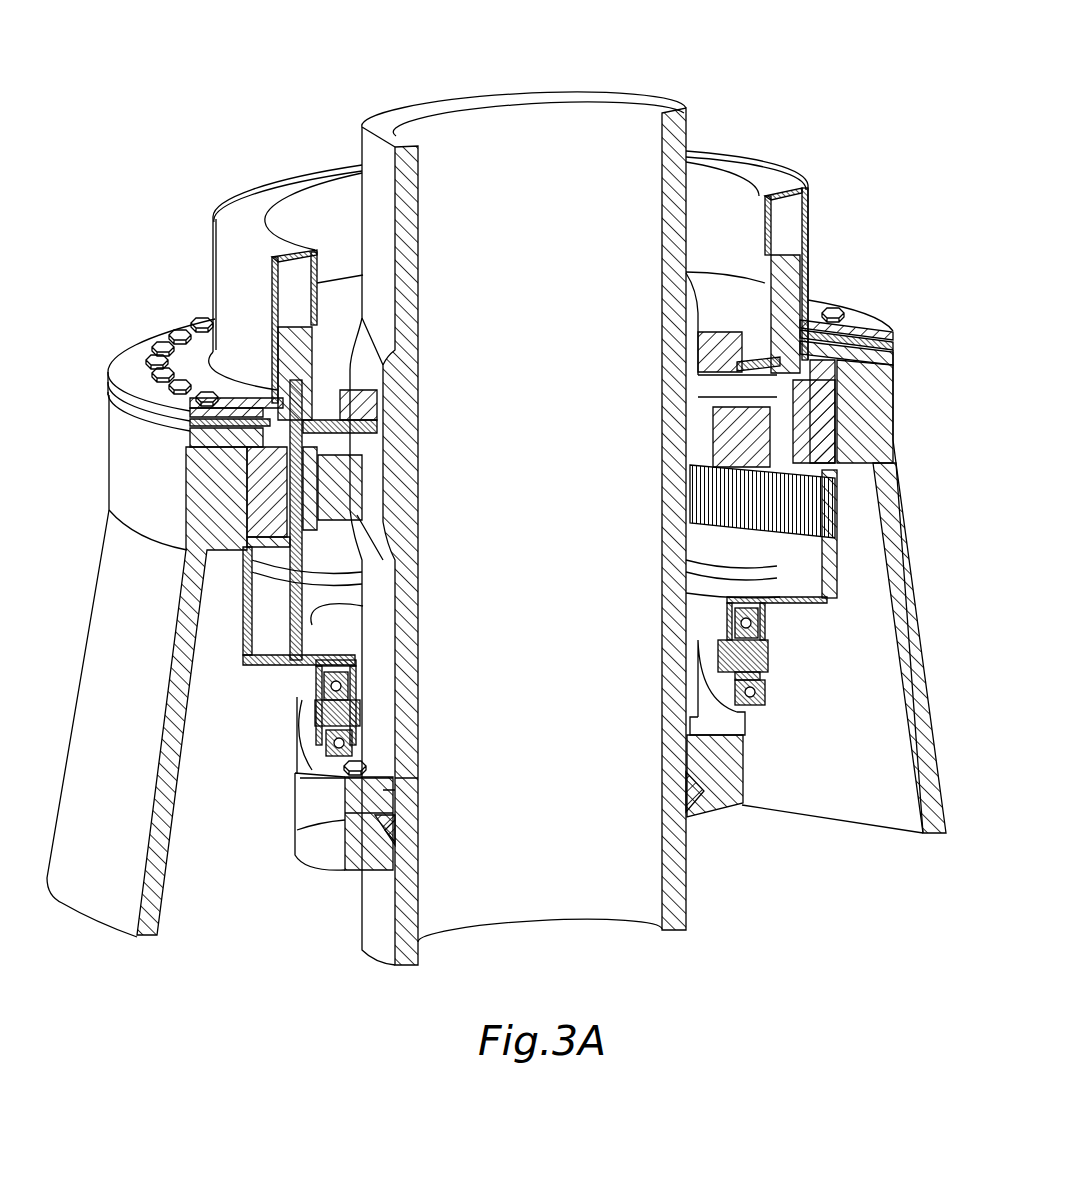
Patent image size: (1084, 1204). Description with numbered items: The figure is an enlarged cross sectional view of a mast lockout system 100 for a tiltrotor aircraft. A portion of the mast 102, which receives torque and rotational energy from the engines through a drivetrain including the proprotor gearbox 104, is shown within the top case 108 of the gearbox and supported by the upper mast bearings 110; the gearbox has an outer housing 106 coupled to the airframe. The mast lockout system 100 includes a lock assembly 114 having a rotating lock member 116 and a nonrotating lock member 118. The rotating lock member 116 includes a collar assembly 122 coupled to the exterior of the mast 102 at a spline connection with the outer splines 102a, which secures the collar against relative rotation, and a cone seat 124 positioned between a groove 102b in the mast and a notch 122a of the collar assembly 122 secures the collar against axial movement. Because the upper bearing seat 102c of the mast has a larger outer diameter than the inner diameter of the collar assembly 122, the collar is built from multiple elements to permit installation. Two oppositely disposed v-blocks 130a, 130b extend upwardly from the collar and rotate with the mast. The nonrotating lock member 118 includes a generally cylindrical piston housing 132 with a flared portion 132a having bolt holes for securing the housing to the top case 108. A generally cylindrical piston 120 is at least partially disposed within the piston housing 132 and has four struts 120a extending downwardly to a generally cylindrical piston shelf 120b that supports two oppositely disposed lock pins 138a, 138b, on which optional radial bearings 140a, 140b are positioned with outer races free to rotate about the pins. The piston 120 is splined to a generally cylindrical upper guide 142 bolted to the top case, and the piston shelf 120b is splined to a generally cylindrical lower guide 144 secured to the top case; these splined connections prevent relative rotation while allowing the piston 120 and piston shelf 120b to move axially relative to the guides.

The mast lockout system 100 is at (740, 137).
The mast 102 is at (508, 484).
The outer splines 102a is at (400, 790).
The groove 102b is at (400, 830).
The upper bearing seat 102c is at (390, 470).
The proprotor gearbox 104 is at (778, 796).
The outer housing 106 is at (826, 800).
The top case 108 is at (882, 812).
The upper mast bearings 110 is at (727, 445).
The lock assembly 114 is at (766, 690).
The rotating lock member 116 is at (746, 776).
The nonrotating lock member 118 is at (757, 650).
The piston 120 is at (843, 441).
The struts 120a is at (800, 560).
The piston shelf 120b is at (796, 582).
The collar assembly 122 is at (289, 625).
The notch 122a is at (360, 815).
The cone seat 124 is at (688, 793).
The v-block 130a is at (302, 770).
The v-block 130b is at (722, 716).
The piston housing 132 is at (222, 268).
The flared portion 132a is at (136, 340).
The lock pin 138a is at (308, 716).
The lock pin 138b is at (776, 669).
The radial bearing 140a is at (324, 683).
The radial bearing 140b is at (766, 628).
The upper guide 142 is at (185, 427).
The lower guide 144 is at (812, 518).